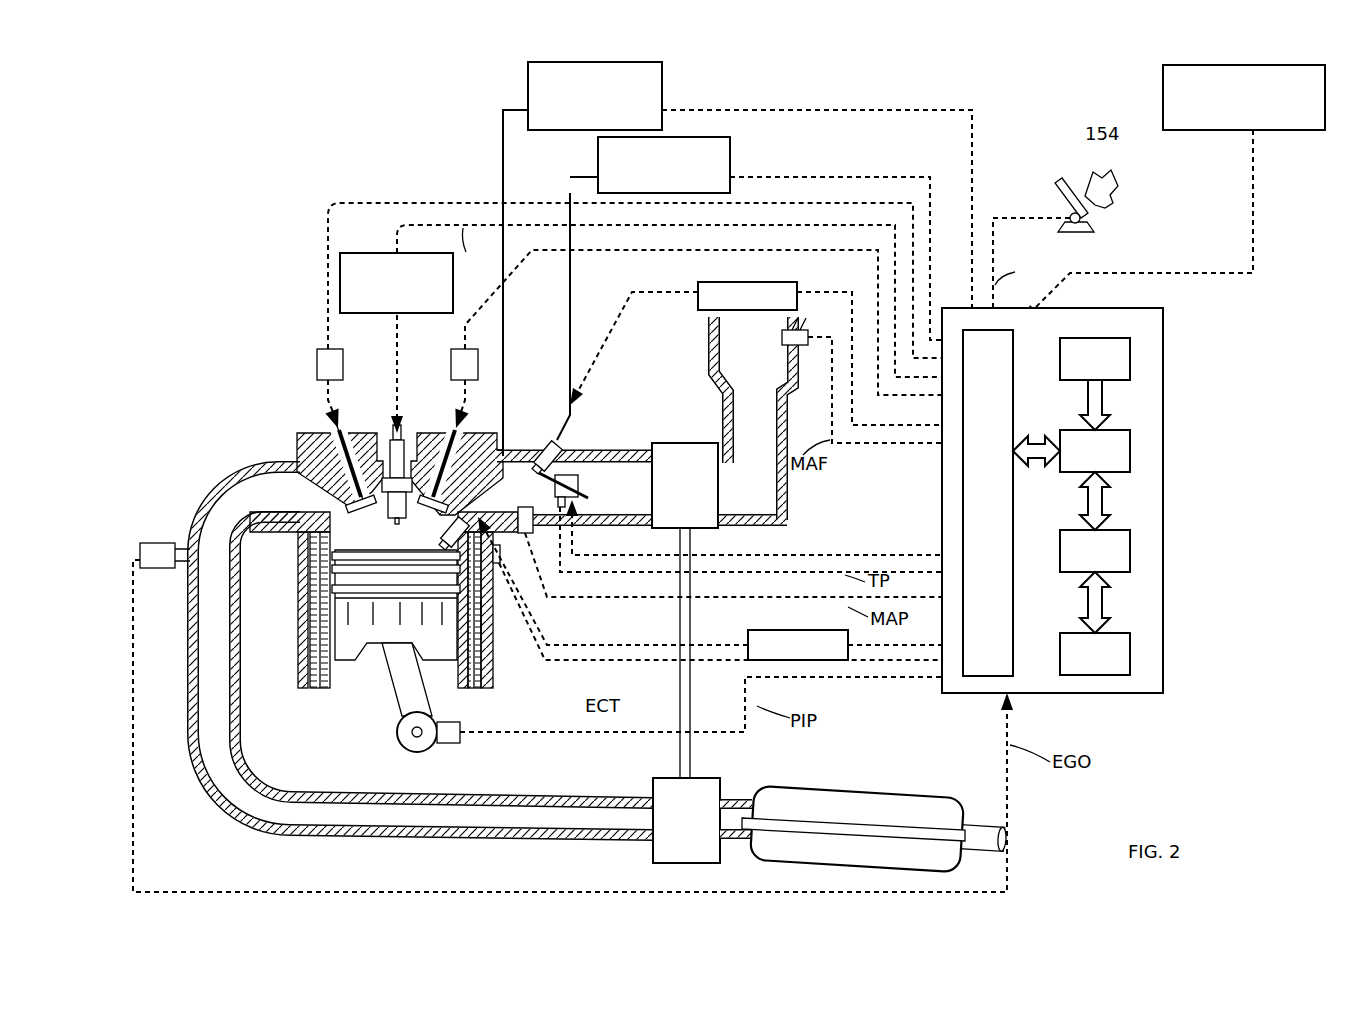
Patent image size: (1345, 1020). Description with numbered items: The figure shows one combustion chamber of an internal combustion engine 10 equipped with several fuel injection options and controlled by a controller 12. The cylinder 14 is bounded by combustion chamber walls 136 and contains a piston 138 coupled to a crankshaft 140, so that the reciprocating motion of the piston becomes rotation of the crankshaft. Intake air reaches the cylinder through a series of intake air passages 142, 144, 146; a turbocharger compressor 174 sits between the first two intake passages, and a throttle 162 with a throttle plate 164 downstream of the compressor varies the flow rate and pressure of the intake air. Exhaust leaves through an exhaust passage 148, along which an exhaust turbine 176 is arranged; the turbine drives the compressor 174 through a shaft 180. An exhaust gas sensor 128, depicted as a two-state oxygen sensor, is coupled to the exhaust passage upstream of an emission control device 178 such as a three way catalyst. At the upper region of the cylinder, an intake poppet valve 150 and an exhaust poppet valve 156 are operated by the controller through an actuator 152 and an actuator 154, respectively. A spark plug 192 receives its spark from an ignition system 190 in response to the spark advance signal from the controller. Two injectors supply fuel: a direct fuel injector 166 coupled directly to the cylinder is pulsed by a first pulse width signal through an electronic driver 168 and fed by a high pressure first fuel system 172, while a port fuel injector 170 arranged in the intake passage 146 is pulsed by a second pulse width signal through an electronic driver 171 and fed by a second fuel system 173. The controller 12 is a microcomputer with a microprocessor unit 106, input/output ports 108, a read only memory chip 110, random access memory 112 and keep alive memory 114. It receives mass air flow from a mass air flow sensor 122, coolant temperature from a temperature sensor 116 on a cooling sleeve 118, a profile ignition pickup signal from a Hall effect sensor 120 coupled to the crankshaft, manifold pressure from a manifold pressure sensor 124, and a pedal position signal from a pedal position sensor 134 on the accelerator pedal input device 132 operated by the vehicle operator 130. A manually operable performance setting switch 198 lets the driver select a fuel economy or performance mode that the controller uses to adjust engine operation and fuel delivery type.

The internal combustion engine 10 is at (228, 388).
The controller 12 is at (1094, 488).
The cylinder 14 is at (383, 579).
The microprocessor unit 106 is at (1135, 450).
The input/output ports 108 is at (1018, 330).
The read only memory chip 110 is at (1135, 358).
The random access memory 112 is at (1135, 552).
The keep alive memory 114 is at (1135, 655).
The temperature sensor 116 is at (499, 575).
The cooling sleeve 118 is at (478, 630).
The Hall effect sensor 120 is at (450, 745).
The mass air flow sensor 122 is at (803, 328).
The manifold pressure sensor 124 is at (530, 537).
The exhaust gas sensor 128 is at (140, 555).
The vehicle operator 130 is at (1112, 183).
The input device 132 is at (1058, 195).
The pedal position sensor 134 is at (1090, 220).
The combustion chamber walls 136 is at (335, 690).
The piston 138 is at (380, 630).
The crankshaft 140 is at (407, 748).
The intake air passage 142 is at (771, 354).
The intake air passage 144 is at (636, 494).
The intake air passage 146 is at (534, 494).
The exhaust passage 148 is at (284, 500).
The intake poppet valve 150 is at (430, 508).
The actuator 152 is at (451, 360).
The actuator 154 is at (317, 360).
The exhaust poppet valve 156 is at (355, 508).
The throttle 162 is at (554, 461).
The throttle plate 164 is at (533, 452).
The fuel injector 166 is at (463, 523).
The electronic driver 168 is at (748, 632).
The fuel injector 170 is at (552, 443).
The electronic driver 171 is at (698, 284).
The fuel system-1 172 is at (662, 70).
The fuel system-2 173 is at (730, 146).
The compressor 174 is at (672, 443).
The exhaust turbine 176 is at (653, 850).
The emission control device 178 is at (920, 800).
The shaft 180 is at (690, 742).
The ignition system 190 is at (352, 253).
The spark plug 192 is at (391, 462).
The performance setting switch 198 is at (1325, 130).